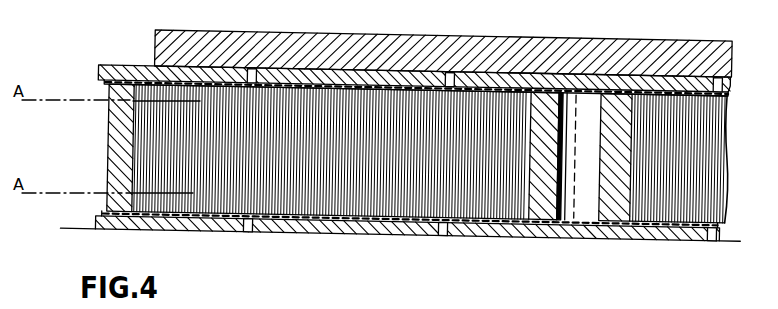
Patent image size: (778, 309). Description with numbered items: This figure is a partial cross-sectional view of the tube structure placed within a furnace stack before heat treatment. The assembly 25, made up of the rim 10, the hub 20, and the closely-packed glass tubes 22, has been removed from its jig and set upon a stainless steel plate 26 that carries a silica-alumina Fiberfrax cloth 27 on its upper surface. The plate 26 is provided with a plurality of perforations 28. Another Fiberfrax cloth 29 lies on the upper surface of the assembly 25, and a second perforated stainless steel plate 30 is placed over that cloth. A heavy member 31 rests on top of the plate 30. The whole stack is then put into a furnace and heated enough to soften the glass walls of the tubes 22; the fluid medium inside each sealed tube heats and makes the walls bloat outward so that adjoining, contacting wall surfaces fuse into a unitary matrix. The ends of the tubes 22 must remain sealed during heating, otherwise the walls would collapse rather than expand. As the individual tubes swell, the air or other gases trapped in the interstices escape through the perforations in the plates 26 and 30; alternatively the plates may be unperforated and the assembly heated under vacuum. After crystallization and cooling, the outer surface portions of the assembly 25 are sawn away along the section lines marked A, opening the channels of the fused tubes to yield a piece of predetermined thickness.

The rim 10 is at (108, 152).
The hub 20 is at (548, 178).
The glass tubes 22 is at (352, 162).
The assembly 25 is at (758, 163).
The stainless steel plate 26 is at (303, 229).
The silica-alumina (Fiberfrax) cloth 27 is at (380, 221).
The perforations 28 is at (250, 233).
The Fiberfrax cloth 29 is at (105, 83).
The perforated stainless steel plate 30 is at (121, 66).
The heavy member 31 is at (187, 31).